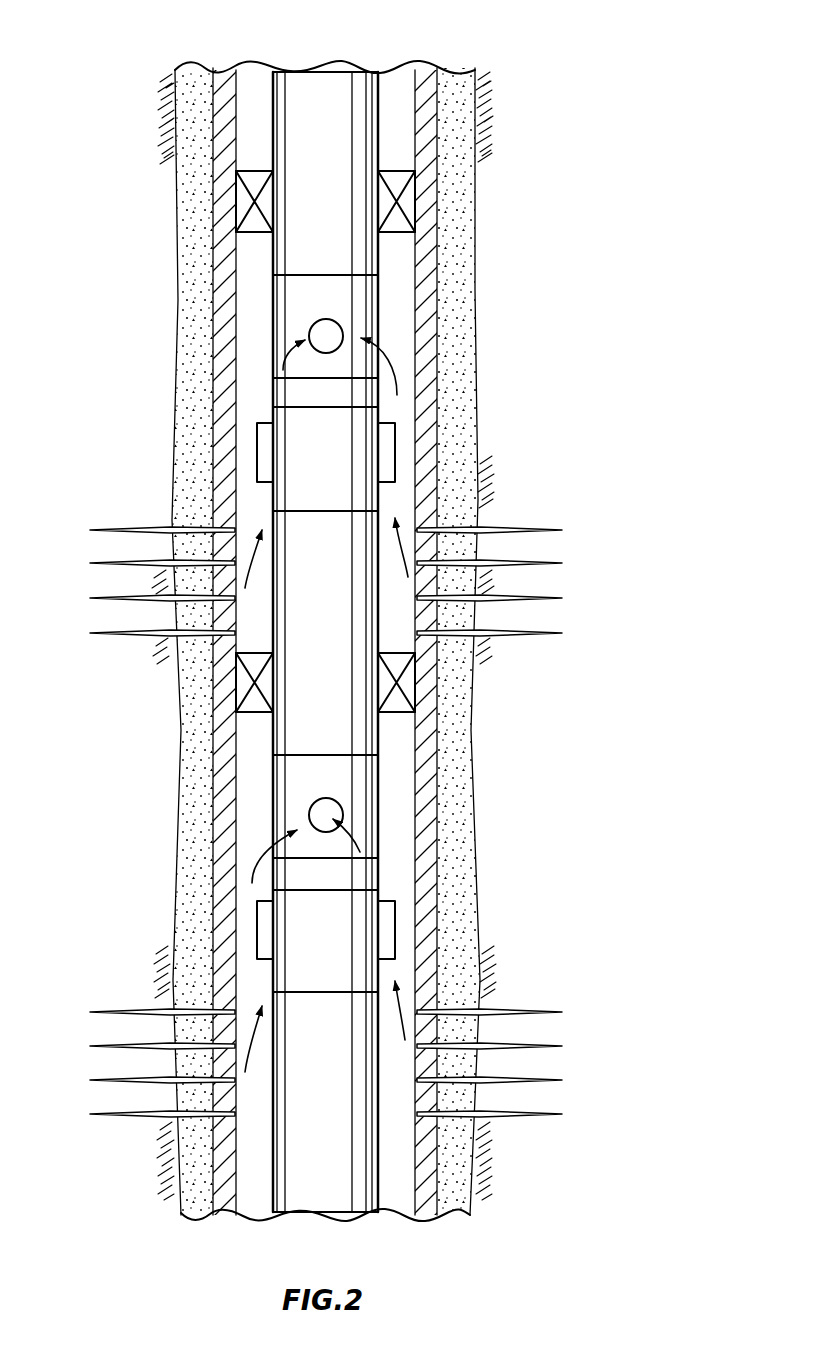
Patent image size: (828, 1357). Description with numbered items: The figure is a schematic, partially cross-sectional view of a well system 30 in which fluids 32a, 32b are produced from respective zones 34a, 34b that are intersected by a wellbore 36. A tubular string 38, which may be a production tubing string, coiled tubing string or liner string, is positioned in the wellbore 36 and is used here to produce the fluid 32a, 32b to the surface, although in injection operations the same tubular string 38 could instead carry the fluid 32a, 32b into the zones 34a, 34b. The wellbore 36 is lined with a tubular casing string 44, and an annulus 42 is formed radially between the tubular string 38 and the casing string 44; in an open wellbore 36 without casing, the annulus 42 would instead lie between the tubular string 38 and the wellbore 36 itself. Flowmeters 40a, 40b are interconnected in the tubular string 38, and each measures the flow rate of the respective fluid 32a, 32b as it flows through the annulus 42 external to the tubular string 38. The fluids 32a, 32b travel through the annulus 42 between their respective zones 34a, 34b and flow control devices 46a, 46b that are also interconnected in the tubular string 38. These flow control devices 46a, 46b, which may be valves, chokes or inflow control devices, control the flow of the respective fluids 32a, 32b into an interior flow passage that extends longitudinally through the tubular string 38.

The well system 30 is at (644, 116).
The wellbore 36 is at (470, 185).
The tubular string 38 is at (269, 79).
The tubular casing string 44 is at (211, 229).
The annulus 42 is at (253, 730).
The flow control device 46b is at (262, 306).
The flow control device 46a is at (270, 781).
The fluid 32b is at (393, 368).
The fluid 32a is at (353, 840).
The flowmeter 40b is at (252, 437).
The flowmeter 40a is at (254, 912).
The zone 34b is at (570, 550).
The zone 34a is at (577, 1030).